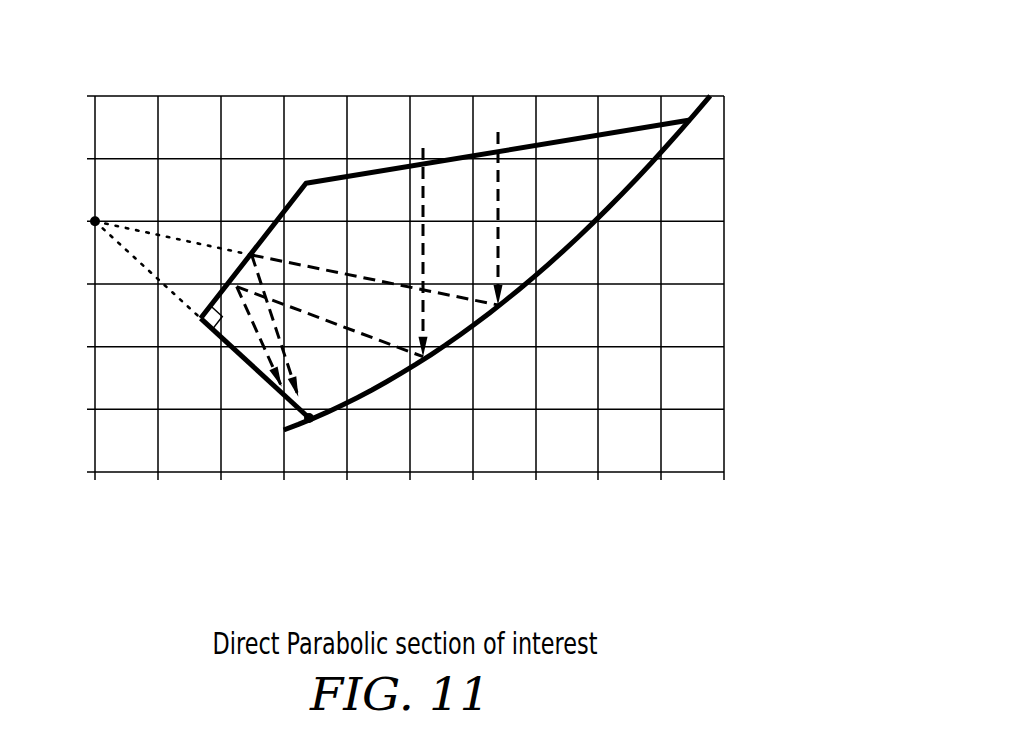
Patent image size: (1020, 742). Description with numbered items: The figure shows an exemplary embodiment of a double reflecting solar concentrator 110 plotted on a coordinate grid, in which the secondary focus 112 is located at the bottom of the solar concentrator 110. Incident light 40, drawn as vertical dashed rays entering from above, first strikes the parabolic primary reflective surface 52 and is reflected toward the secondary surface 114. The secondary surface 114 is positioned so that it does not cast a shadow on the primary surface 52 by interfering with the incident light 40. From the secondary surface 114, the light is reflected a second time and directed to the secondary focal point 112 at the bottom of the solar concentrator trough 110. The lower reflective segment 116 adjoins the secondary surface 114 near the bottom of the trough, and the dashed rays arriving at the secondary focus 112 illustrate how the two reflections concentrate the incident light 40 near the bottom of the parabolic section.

The incident light 40 is at (425, 148).
The primary reflective surface 52 is at (572, 251).
The double reflecting solar concentrator 110 is at (778, 172).
The secondary focus 112 is at (307, 425).
The secondary surface 114 is at (297, 190).
The lower reflective surface 116 is at (262, 375).